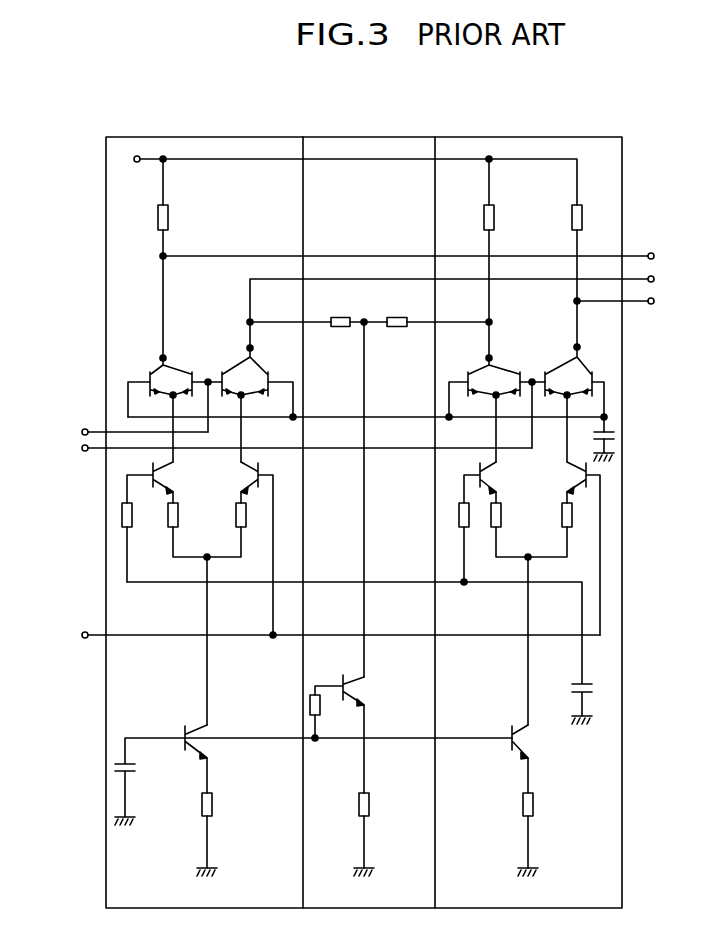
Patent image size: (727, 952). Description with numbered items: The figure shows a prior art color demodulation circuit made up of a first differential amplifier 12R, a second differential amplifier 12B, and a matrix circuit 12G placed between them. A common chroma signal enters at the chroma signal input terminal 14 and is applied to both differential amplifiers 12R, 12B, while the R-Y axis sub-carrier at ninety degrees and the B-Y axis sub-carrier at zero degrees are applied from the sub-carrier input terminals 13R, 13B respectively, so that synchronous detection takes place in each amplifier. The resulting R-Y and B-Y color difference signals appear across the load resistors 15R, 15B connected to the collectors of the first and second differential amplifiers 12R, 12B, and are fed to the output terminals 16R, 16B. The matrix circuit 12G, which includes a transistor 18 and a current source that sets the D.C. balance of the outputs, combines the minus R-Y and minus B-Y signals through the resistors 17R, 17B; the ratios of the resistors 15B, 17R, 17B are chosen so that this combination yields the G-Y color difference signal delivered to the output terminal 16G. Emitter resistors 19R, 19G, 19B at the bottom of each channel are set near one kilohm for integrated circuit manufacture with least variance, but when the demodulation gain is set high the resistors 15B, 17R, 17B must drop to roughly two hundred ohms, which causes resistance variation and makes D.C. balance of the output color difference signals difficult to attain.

The first differential amplifier 12R is at (268, 137).
The matrix circuit 12G is at (396, 137).
The second differential amplifier 12B is at (548, 137).
The sub-carrier input terminal 13R is at (82, 432).
The sub-carrier input terminal 13B is at (82, 448).
The chroma signal input terminal 14 is at (82, 635).
The load resistor 15R is at (169, 215).
The load resistor 15B is at (495, 215).
The output terminal 16R is at (655, 256).
The output terminal 16G is at (655, 279).
The output terminal 16B is at (655, 301).
The resistor 17R is at (340, 317).
The resistor 17B is at (399, 317).
The transistor 18 is at (368, 683).
The resistor 19R is at (218, 804).
The resistor 19G is at (375, 803).
The resistor 19B is at (539, 804).